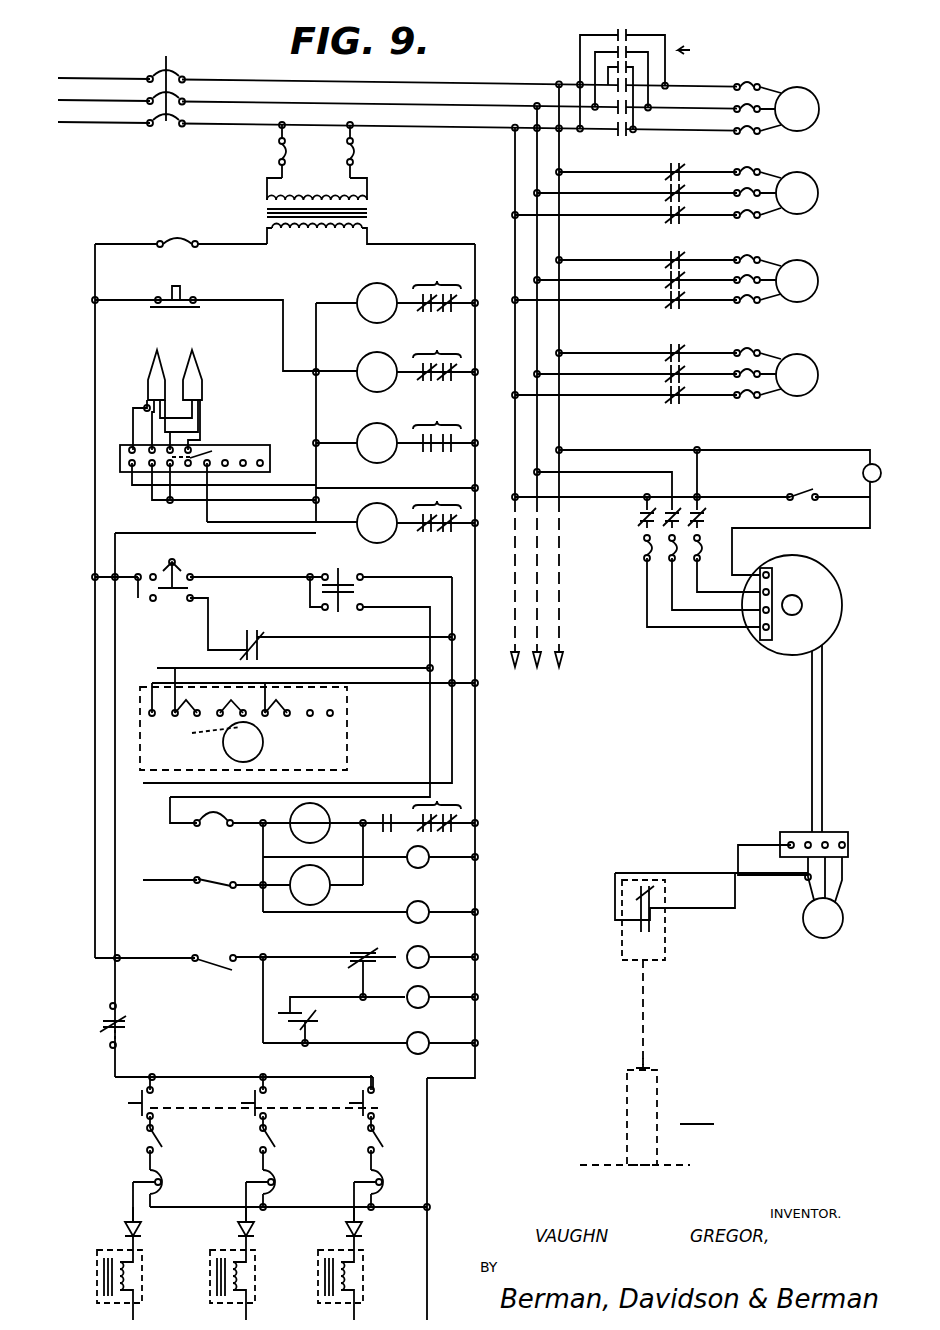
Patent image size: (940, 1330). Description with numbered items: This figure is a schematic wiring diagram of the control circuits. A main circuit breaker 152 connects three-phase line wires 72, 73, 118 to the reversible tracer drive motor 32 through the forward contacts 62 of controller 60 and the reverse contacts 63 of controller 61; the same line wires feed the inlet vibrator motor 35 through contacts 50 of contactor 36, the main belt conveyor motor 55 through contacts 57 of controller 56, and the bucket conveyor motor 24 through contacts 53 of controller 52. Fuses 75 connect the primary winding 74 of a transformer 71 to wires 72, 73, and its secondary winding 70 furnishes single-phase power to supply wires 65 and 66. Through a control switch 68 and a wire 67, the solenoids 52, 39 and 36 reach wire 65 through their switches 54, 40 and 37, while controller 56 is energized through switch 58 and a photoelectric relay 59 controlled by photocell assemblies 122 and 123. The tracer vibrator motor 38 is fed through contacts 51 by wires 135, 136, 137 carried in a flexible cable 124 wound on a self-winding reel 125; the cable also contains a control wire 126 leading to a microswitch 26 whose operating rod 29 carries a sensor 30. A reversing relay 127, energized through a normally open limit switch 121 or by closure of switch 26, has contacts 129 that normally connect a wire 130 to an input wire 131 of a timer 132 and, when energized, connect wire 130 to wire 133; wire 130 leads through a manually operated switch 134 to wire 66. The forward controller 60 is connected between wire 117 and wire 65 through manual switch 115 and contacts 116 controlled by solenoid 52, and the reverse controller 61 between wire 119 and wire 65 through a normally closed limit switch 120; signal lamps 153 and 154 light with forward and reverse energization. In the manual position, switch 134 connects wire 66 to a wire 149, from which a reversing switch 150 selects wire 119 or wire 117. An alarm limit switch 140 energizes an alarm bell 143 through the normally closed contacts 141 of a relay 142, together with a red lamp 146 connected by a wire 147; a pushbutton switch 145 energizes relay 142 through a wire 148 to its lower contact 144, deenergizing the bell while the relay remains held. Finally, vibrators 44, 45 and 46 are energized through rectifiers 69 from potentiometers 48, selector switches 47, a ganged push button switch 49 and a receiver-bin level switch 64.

The main circuit breaker 152 is at (158, 70).
The line wire 118 is at (448, 78).
The supply wire 73 is at (404, 127).
The reverse contacts 63 is at (605, 66).
The forward contacts 62 is at (617, 136).
The drive motor 32 is at (797, 131).
The motor 35 is at (814, 183).
The contacts 50 is at (688, 188).
The motor 55 is at (814, 270).
The contacts 57 is at (688, 272).
The drive motor 24 is at (814, 365).
The contacts 53 is at (688, 366).
The fuses 75 is at (347, 150).
The supply wire 72 is at (378, 130).
The primary winding 74 is at (308, 197).
The transformer 71 is at (372, 212).
The secondary winding 70 is at (280, 233).
The second current-supply wire 66 is at (94, 288).
The manually operated control switch 68 is at (185, 293).
The wire 67 is at (290, 332).
The electromagnetic controller 52 is at (384, 289).
The normally closed manually controlled switch means 54 is at (437, 285).
The electromagnetic controller 39 is at (359, 368).
The normally closed manually operated switch means 40 is at (437, 355).
The electromagnetic contactor 36 is at (359, 439).
The normally open manually operated switch means 37 is at (437, 426).
The normally closed switch means 58 is at (437, 507).
The electromagnetic controller 56 is at (366, 537).
The photocell assembly 122 is at (149, 392).
The photocell assembly 123 is at (202, 392).
The photoelectric relay assembly 59 is at (252, 446).
The contacts 51 is at (692, 530).
The reversing relay 127 is at (877, 464).
The limit switch 121 is at (794, 494).
The control wire 126 is at (822, 528).
The reel assembly 125 is at (843, 588).
The wire 135 is at (712, 628).
The wire 136 is at (722, 612).
The wire 137 is at (731, 597).
The flexible cable 124 is at (822, 748).
The vibrator motor 38 is at (843, 920).
The microswitch 26 is at (622, 942).
The operating rod 29 is at (648, 1016).
The sensor 30 is at (660, 1100).
The manually operated switch 134 is at (185, 572).
The wire 149 is at (268, 577).
The reversing switch 150 is at (325, 572).
The wire 119 is at (452, 578).
The contacts 129 is at (245, 632).
The wire 133 is at (270, 638).
The wire 130 is at (247, 632).
The input wire 131 is at (166, 668).
The timer 132 is at (348, 724).
The wire 117 is at (430, 712).
The first current-supply wire 65 is at (478, 748).
The forward electromagnetic controller 60 is at (291, 822).
The manually operated switch means 115 is at (403, 804).
The contacts 116 is at (382, 832).
The reverse electromagnetic controller 61 is at (290, 881).
The signal lamp 153 is at (422, 868).
The signal lamp 154 is at (407, 912).
The limit switch 120 is at (201, 887).
The alarm limit switch 140 is at (215, 957).
The normally closed contacts 141 is at (350, 955).
The alarm bell 143 is at (425, 946).
The relay 142 is at (430, 996).
The pushbutton switch 145 is at (288, 1006).
The lower contact 144 is at (358, 984).
The wire 148 is at (394, 1000).
The wire 147 is at (262, 1028).
The red lamp 146 is at (415, 1054).
The level-responsive switch 64 is at (128, 1020).
The ganged switch assembly 49 is at (130, 1105).
The selector switch 47 is at (163, 1144).
The potentiometer 48 is at (148, 1181).
The rectifier 69 is at (128, 1224).
The electromagnetic vibrator 44 is at (97, 1263).
The electromagnetic vibrator 45 is at (210, 1263).
The electromagnetic vibrator 46 is at (318, 1263).